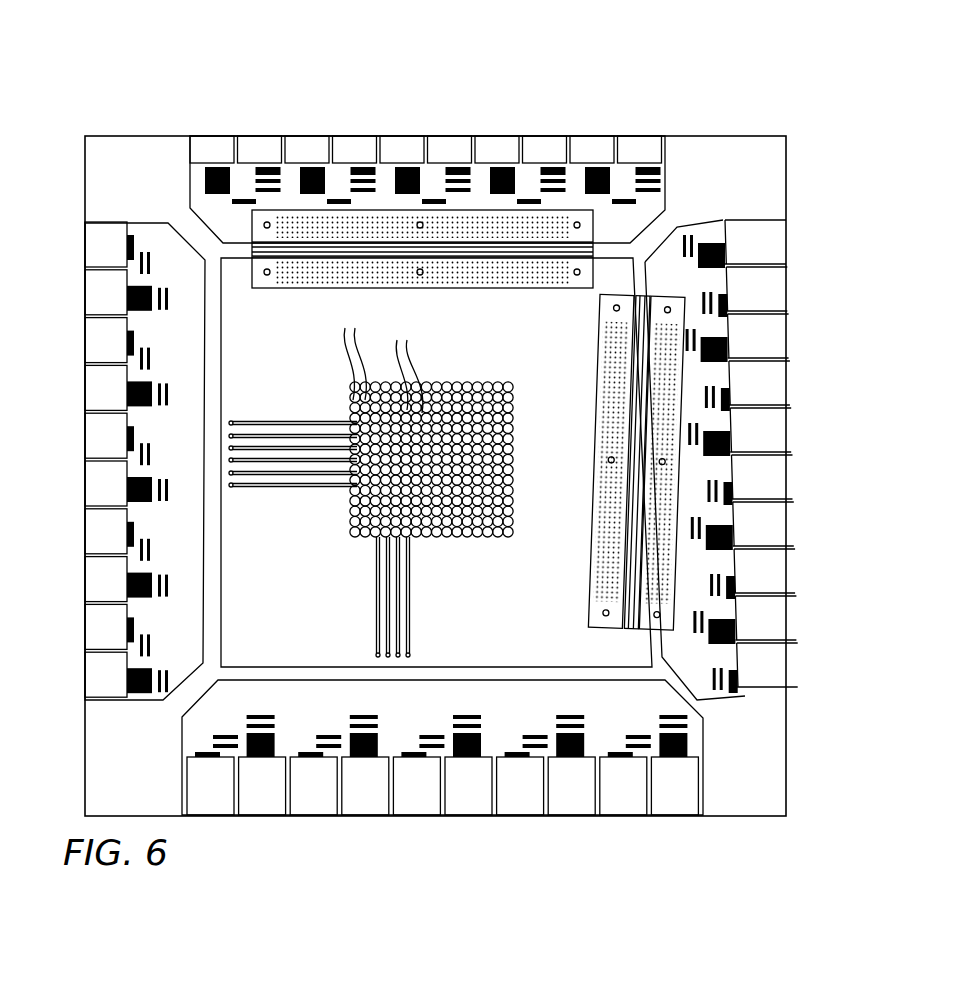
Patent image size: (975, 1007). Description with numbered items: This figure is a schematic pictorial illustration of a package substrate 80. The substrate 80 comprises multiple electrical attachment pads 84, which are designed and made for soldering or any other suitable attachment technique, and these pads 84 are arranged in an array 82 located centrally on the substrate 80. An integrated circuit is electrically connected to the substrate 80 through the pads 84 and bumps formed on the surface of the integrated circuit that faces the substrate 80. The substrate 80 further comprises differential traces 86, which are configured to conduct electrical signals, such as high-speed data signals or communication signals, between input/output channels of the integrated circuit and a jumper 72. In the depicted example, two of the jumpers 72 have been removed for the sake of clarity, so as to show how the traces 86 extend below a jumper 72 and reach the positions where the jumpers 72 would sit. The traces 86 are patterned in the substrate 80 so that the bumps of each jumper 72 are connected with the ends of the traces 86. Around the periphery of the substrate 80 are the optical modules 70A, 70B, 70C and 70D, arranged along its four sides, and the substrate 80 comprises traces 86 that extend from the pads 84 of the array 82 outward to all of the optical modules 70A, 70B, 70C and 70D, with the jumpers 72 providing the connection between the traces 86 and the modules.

The optical module 70A is at (806, 376).
The optical module 70B is at (398, 845).
The optical module 70C is at (62, 630).
The optical module 70D is at (638, 104).
The jumper 72 is at (600, 325).
The package substrate 80 is at (788, 770).
The array 82 is at (506, 554).
The electrical attachment pads 84 is at (379, 357).
The differential traces 86 is at (398, 610).